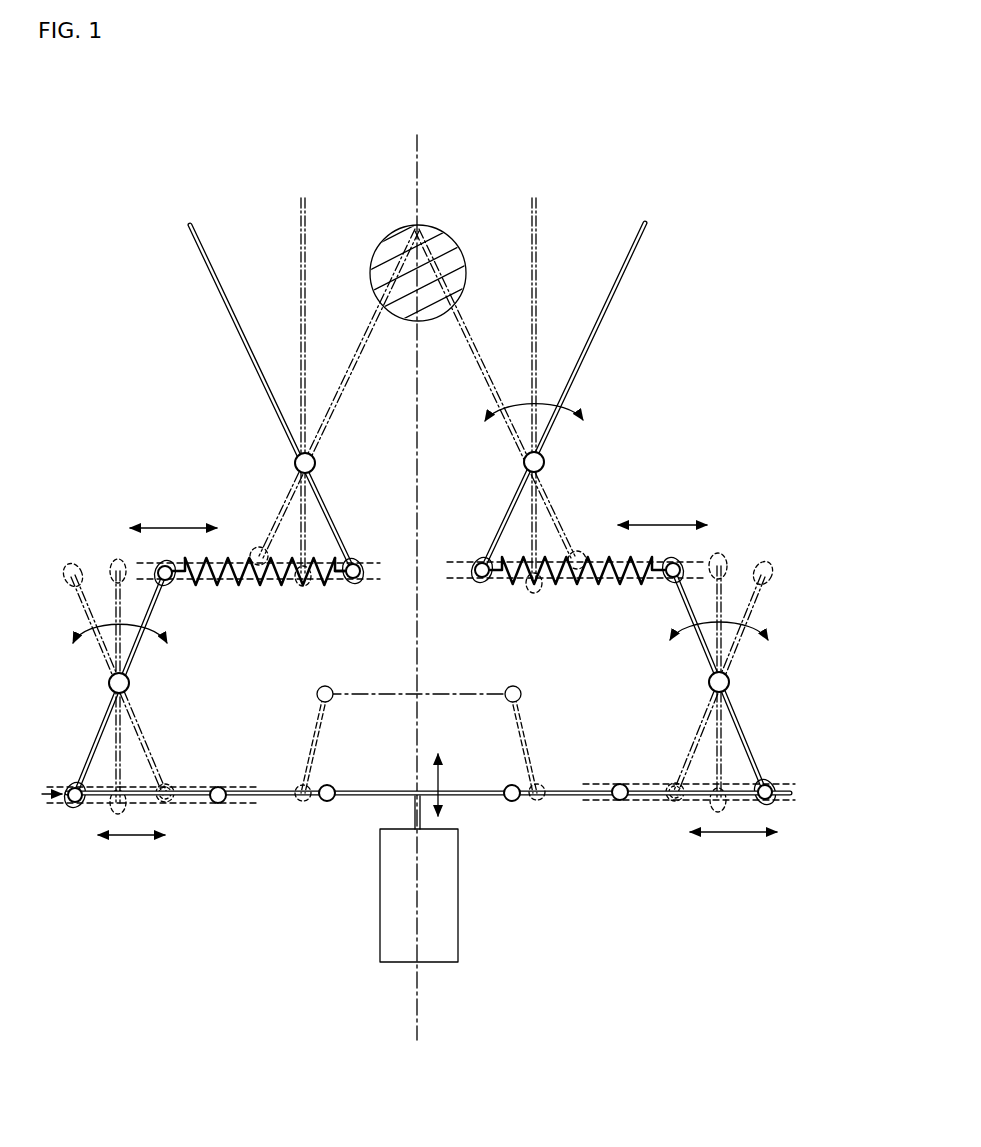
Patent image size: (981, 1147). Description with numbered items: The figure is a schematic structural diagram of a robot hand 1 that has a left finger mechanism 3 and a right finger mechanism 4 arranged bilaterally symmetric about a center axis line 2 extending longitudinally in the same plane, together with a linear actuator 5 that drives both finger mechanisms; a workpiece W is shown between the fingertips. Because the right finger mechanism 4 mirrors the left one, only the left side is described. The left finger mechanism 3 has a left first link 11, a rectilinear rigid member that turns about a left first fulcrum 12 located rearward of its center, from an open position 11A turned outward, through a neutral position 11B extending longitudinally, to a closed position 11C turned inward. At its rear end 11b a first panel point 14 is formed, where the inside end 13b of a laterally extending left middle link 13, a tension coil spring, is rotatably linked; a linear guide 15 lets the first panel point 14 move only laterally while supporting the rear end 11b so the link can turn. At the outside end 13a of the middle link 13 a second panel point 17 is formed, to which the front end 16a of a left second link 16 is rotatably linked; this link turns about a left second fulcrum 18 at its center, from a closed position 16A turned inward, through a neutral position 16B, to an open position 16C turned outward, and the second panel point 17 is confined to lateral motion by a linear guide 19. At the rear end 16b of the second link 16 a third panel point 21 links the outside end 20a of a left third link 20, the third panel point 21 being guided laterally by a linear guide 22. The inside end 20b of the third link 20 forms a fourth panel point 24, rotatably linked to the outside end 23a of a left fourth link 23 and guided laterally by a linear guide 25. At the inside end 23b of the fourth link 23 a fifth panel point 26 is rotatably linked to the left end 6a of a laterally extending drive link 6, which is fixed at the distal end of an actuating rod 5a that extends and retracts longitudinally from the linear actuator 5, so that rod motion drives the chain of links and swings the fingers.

The robot hand 1 is at (700, 218).
The center axis line 2 is at (418, 180).
The workpiece W is at (440, 240).
The left finger mechanism 3 is at (132, 372).
The right finger mechanism 4 is at (688, 388).
The linear actuator 5 is at (458, 905).
The actuating rod 5a is at (414, 807).
The drive link 6 is at (397, 790).
The left end of drive link 6a is at (321, 836).
The left first link 11 is at (230, 308).
The open position 11A is at (237, 397).
The neutral position 11B is at (300, 272).
The closed position 11C is at (357, 350).
The rear end of left first link 11b is at (354, 560).
The left first fulcrum 12 is at (294, 464).
The left middle link 13 is at (264, 613).
The outside end of middle link 13a is at (168, 584).
The inside end of middle link 13b is at (343, 587).
The first panel point 14 is at (340, 586).
The linear guide 15 is at (360, 584).
The left second link 16 is at (121, 684).
The closed position 16A is at (121, 684).
The neutral position 16B is at (122, 757).
The open position 16C is at (137, 720).
The front end of left second link 16a is at (168, 590).
The rear end of left second link 16b is at (72, 784).
The second panel point 17 is at (150, 572).
The left second fulcrum 18 is at (109, 684).
The linear guide 19 is at (145, 562).
The left third link 20 is at (145, 798).
The outside end of left third link 20a is at (76, 804).
The inside end of left third link 20b is at (232, 855).
The third panel point 21 is at (44, 800).
The linear guide 22 is at (90, 805).
The left fourth link 23 is at (268, 799).
The outside end of left fourth link 23a is at (218, 795).
The inside end of left fourth link 23b is at (327, 793).
The fourth panel point 24 is at (218, 804).
The linear guide 25 is at (232, 787).
The fifth panel point 26 is at (327, 802).